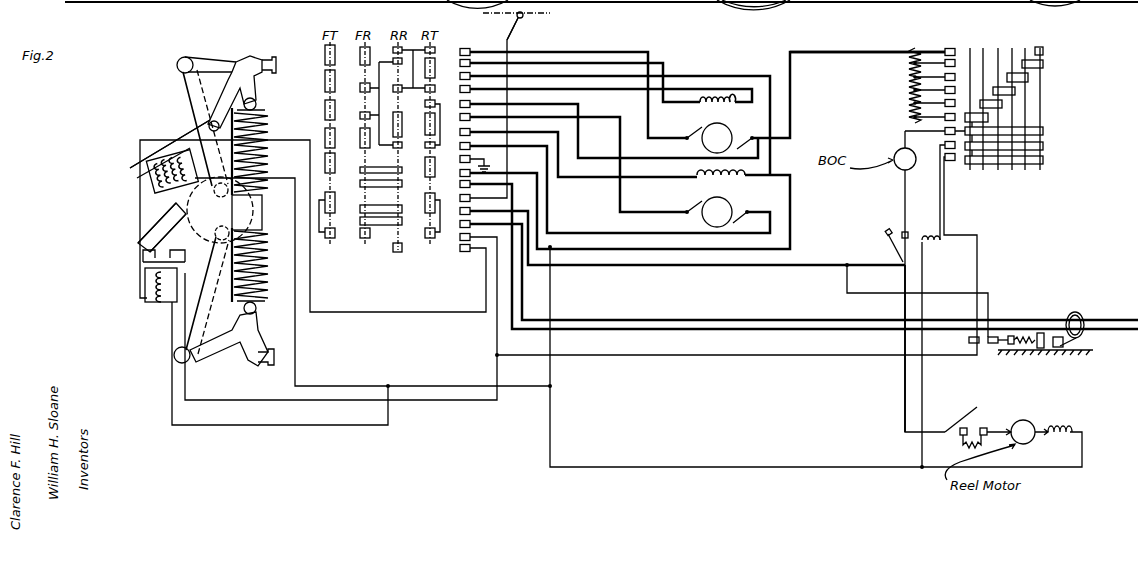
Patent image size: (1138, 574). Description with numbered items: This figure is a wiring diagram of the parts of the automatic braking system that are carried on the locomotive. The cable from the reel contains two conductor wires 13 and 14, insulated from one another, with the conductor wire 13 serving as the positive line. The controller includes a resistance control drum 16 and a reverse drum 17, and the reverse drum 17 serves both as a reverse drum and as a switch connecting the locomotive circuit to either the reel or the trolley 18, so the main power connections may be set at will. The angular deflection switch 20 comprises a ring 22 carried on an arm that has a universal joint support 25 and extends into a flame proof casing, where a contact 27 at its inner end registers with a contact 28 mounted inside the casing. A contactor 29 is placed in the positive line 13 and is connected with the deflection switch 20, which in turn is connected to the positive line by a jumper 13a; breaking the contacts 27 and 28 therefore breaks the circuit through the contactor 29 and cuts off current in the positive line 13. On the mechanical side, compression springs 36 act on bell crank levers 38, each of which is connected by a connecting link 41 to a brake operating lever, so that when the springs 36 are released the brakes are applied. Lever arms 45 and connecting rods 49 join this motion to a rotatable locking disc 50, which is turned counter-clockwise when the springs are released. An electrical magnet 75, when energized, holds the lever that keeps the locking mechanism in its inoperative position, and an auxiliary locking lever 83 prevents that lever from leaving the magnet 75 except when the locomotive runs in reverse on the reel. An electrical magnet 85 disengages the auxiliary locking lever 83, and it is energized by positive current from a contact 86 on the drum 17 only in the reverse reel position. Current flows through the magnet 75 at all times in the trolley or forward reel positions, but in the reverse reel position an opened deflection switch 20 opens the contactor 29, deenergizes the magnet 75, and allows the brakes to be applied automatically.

The conductor wire 13 is at (190, 258).
The jumper 13a is at (800, 299).
The conductor wire 14 is at (1090, 346).
The resistance control drum 16 is at (1052, 104).
The reverse drum 17 is at (384, 239).
The trolley 18 is at (504, 32).
The angular deflection switch 20 is at (1037, 360).
The ring 22 is at (1078, 310).
The universal joint support 25 is at (1062, 350).
The contact 27 is at (993, 345).
The contact 28 is at (974, 345).
The contactor 29 is at (908, 236).
The compression spring 36 is at (272, 163).
The bell crank lever 38 is at (262, 86).
The connecting link 41 is at (272, 58).
The lever arm 45 is at (190, 57).
The connecting rod 49 is at (190, 90).
The locking disc 50 is at (258, 208).
The electrical magnet 75 is at (145, 298).
The auxiliary locking lever 83 is at (148, 210).
The electrical magnet 85 is at (172, 152).
The contact 86 is at (396, 253).